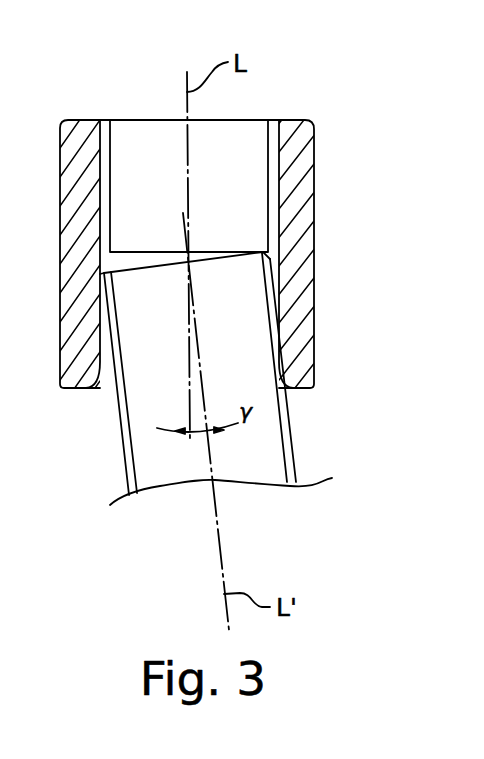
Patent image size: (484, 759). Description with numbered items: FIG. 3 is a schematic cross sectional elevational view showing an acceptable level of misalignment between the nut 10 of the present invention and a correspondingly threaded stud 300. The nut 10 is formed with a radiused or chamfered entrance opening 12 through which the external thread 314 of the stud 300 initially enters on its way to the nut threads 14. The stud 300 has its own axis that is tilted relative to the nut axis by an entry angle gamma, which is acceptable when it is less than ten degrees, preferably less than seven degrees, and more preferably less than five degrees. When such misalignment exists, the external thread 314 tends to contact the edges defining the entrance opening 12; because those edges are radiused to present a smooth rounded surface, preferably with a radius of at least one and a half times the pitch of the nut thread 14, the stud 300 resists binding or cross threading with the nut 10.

The nut 10 is at (336, 183).
The entrance opening 12 is at (93, 389).
The nut thread 14 is at (97, 161).
The stud 300 is at (267, 450).
The external thread 314 is at (127, 470).